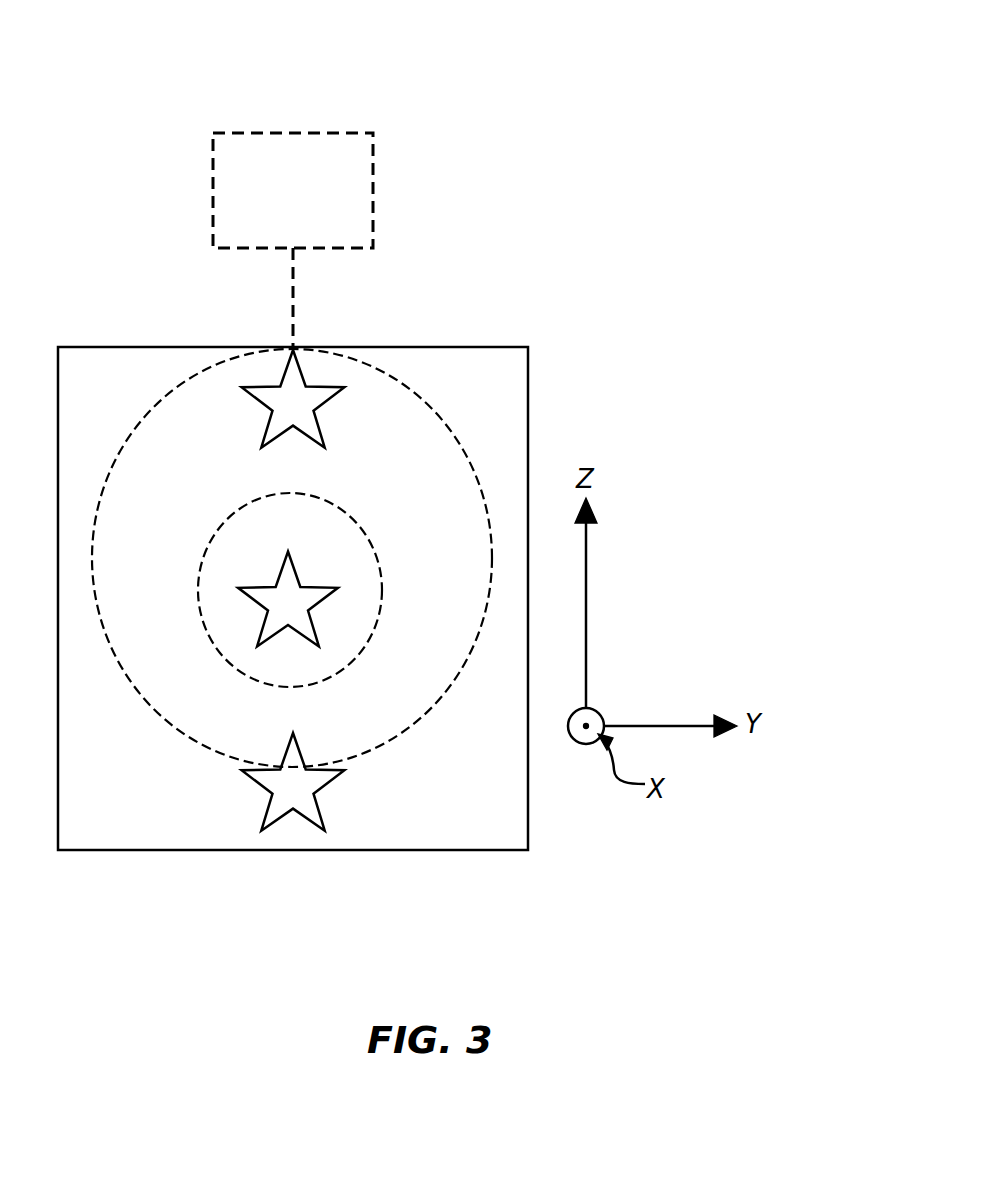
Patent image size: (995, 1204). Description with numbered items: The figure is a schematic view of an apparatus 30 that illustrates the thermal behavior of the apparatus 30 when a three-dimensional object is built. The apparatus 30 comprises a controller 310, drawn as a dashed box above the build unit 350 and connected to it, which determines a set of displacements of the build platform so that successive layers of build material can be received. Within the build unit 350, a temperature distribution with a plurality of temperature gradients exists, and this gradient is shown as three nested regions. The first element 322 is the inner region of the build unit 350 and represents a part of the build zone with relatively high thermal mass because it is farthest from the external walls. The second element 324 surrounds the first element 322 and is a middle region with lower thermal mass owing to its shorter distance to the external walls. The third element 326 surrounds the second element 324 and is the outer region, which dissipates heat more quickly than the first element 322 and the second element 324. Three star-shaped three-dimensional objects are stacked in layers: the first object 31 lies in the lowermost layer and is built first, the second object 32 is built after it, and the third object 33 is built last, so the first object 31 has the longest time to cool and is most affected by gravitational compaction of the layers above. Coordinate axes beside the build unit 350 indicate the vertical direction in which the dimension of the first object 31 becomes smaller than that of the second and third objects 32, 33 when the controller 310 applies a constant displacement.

The apparatus 30 is at (618, 109).
The controller 310 is at (213, 163).
The build unit 350 is at (530, 367).
The third element 326 is at (120, 390).
The second element 324 is at (156, 577).
The first element 322 is at (313, 538).
The third 3D object 33 is at (314, 411).
The second 3D object 32 is at (318, 587).
The first 3D object 31 is at (318, 817).